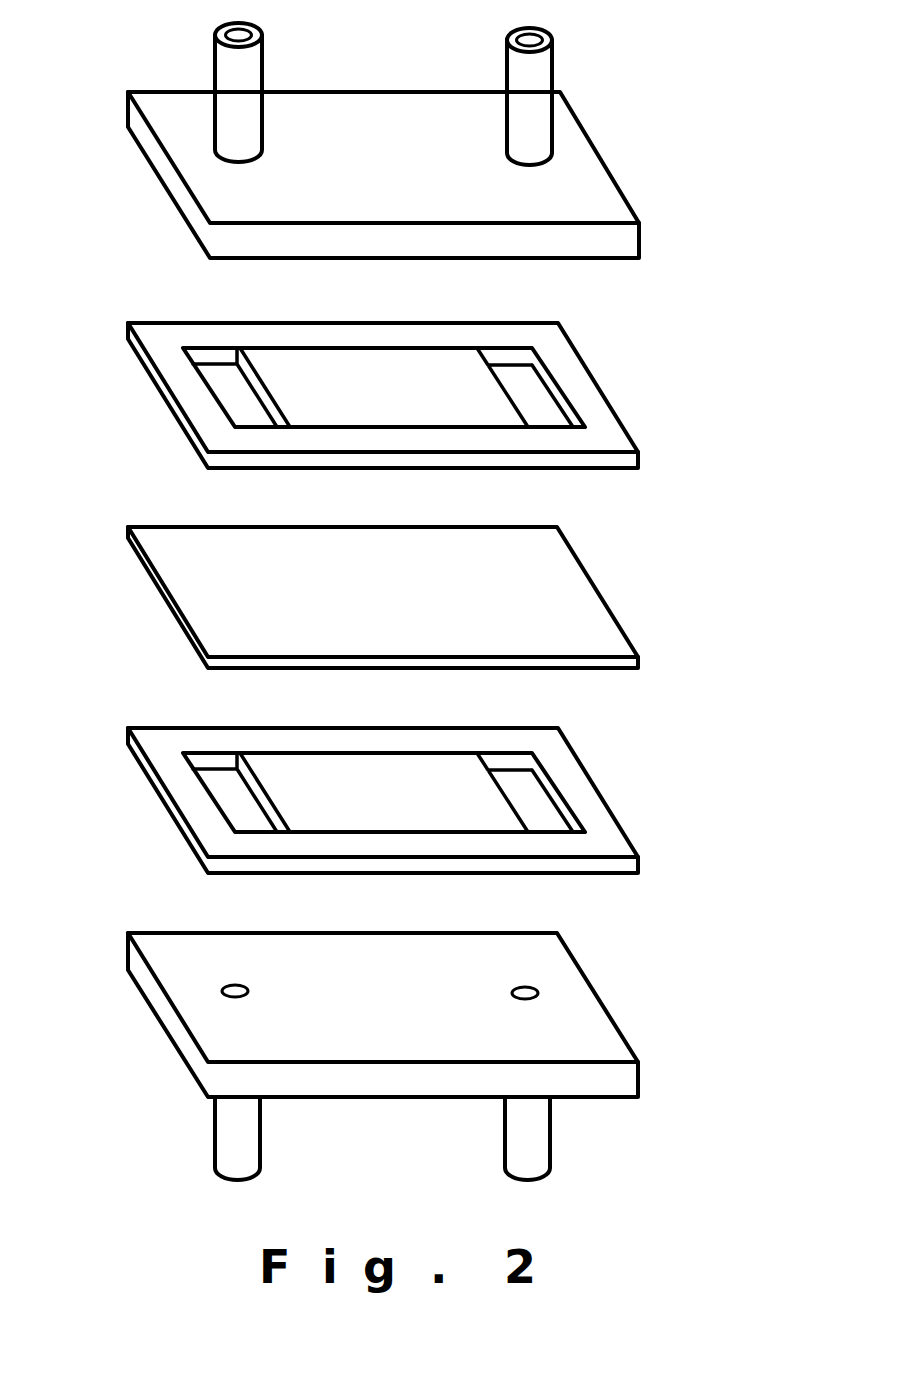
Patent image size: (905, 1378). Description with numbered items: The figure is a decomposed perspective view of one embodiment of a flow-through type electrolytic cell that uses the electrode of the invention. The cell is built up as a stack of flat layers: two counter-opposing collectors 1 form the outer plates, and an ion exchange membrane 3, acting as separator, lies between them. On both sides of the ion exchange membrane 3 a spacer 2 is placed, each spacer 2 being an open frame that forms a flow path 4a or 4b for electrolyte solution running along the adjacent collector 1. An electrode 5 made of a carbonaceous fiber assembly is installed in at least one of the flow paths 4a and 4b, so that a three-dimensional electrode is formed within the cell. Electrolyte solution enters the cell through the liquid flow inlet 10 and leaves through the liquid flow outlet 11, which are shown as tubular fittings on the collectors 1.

The collector 1 is at (153, 174).
The spacer 2 is at (150, 375).
The ion exchange membrane 3 is at (148, 577).
The flow path 4a is at (245, 817).
The flow path 4b is at (245, 408).
The electrode 5 is at (438, 370).
The liquid flow inlet 10 is at (507, 62).
The liquid flow outlet 11 is at (262, 68).